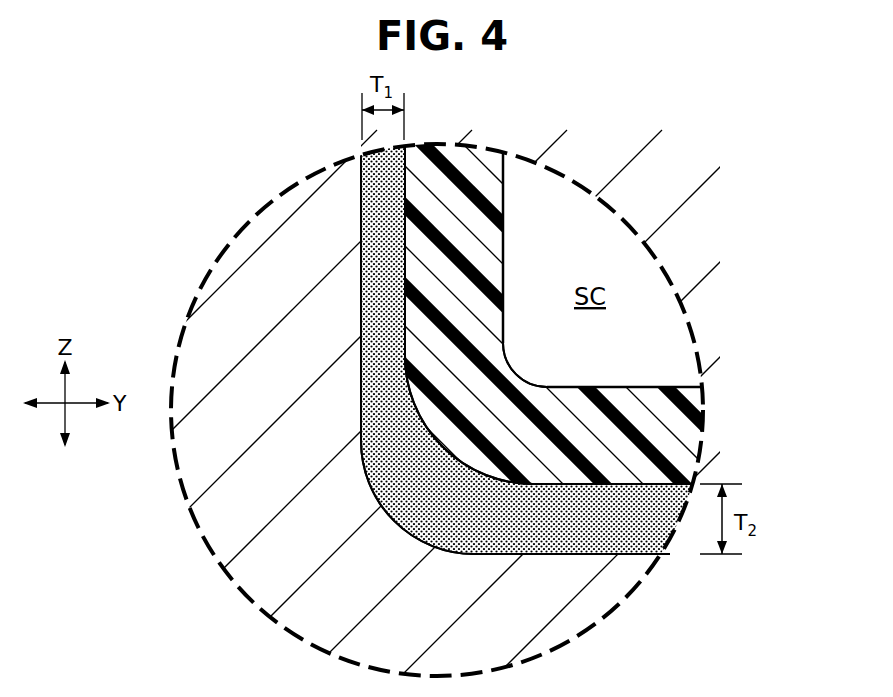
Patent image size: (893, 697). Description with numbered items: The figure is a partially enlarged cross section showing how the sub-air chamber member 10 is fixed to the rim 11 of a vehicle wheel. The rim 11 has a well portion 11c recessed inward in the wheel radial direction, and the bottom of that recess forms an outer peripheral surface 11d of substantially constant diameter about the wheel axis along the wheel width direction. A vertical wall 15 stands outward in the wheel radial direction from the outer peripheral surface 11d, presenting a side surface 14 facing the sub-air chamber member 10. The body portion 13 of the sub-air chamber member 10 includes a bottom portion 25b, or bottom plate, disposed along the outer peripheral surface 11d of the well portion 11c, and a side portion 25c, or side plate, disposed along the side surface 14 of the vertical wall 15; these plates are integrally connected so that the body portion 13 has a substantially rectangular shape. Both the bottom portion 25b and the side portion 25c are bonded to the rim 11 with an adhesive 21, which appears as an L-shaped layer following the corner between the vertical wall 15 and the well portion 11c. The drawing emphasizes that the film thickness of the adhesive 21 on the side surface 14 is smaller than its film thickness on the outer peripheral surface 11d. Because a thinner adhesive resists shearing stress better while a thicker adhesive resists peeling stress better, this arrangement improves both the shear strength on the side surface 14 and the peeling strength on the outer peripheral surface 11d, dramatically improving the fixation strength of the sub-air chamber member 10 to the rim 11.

The sub-air chamber member 10 is at (550, 348).
The body portion 13 is at (472, 160).
The rim 11 is at (315, 225).
The side surface 14 is at (435, 342).
The vertical wall 15 is at (362, 312).
The adhesive 21 is at (428, 508).
The bottom portion 25b is at (640, 388).
The side portion 25c is at (478, 262).
The well portion 11c is at (623, 586).
The outer peripheral surface 11d is at (587, 554).